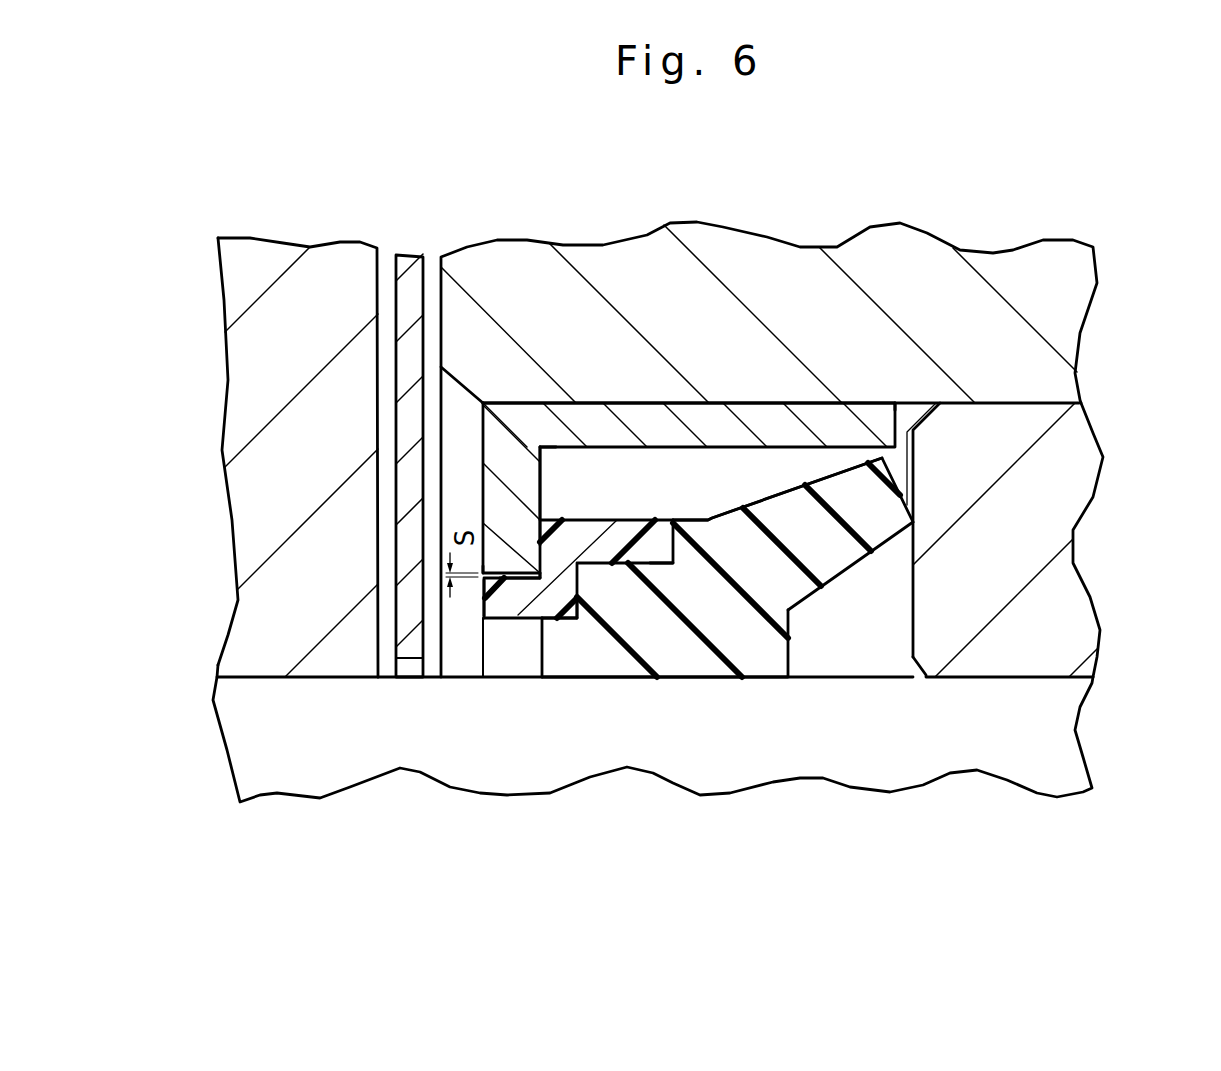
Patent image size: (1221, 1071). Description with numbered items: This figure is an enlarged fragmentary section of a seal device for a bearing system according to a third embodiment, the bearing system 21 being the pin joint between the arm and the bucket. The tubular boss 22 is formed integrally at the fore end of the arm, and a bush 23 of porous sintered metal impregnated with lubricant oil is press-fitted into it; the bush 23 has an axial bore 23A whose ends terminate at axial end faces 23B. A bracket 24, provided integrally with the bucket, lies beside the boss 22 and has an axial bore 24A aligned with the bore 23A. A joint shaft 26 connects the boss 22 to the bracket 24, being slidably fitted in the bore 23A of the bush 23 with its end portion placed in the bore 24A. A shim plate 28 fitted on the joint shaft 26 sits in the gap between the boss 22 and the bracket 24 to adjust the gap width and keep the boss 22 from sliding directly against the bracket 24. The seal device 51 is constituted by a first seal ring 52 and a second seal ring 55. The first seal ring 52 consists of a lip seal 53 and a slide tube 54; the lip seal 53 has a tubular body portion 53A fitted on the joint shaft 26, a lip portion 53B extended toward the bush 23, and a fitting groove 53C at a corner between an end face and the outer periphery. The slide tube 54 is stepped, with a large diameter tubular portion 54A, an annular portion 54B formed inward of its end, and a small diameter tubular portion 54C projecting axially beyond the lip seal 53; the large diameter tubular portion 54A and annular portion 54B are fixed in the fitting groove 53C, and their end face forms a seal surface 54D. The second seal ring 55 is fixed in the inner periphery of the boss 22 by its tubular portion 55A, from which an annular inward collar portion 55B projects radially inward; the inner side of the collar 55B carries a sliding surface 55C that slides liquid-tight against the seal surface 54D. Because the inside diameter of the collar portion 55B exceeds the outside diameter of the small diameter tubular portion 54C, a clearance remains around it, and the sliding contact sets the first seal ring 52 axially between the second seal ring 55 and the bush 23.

The bearing system 21 is at (1085, 236).
The boss member 22 is at (1012, 260).
The bush 23 is at (1063, 527).
The axial bore 23A is at (1057, 677).
The axial end face 23B is at (912, 597).
The bracket 24 is at (258, 263).
The axial bore 24A is at (262, 682).
The joint shaft 26 is at (283, 773).
The shim plate 28 is at (401, 256).
The seal device 51 is at (820, 392).
The first seal ring 52 is at (733, 496).
The lip seal 53 is at (790, 613).
The tubular body portion 53A is at (735, 647).
The lip portion 53B is at (867, 517).
The fitting groove 53C is at (580, 567).
The slide tube 54 is at (637, 557).
The large diameter tubular portion 54A is at (663, 560).
The annular portion 54B is at (552, 590).
The small diameter tubular portion 54C is at (517, 605).
The seal surface 54D is at (540, 540).
The second seal ring 55 is at (652, 423).
The tubular portion 55A is at (872, 417).
The annular inward collar portion 55B is at (497, 620).
The sliding surface 55C is at (543, 560).